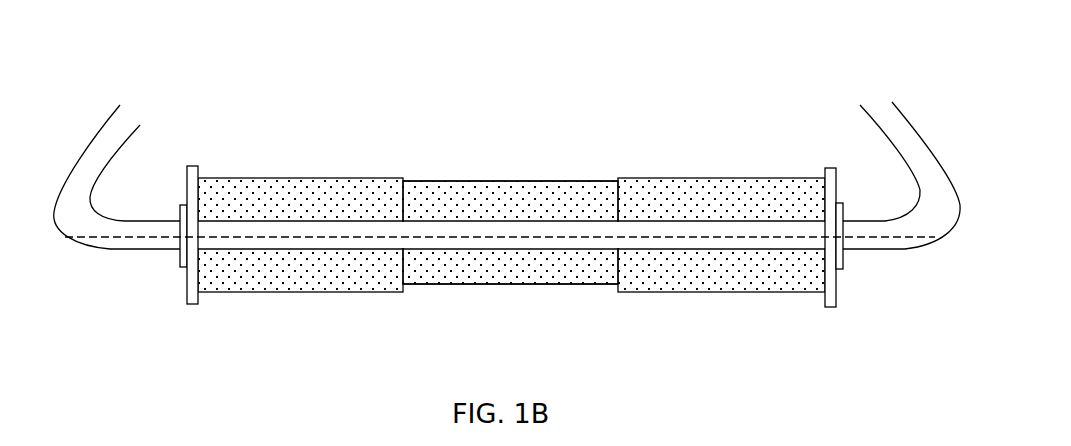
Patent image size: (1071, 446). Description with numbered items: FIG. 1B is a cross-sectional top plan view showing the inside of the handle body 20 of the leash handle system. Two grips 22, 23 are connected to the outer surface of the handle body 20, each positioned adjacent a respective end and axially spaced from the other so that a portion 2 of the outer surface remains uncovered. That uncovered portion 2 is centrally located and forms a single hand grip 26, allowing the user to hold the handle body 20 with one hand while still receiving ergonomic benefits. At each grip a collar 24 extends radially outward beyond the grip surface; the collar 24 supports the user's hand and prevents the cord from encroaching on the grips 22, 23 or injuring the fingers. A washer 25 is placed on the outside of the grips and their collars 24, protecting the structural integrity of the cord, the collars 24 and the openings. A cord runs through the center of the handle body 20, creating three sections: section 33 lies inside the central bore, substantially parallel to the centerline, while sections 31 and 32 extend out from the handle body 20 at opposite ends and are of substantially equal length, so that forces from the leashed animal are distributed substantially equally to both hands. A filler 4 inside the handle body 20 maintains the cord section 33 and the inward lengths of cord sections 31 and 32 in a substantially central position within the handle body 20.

The portion of the outer surface 2 is at (501, 216).
The filler 4 is at (483, 192).
The handle body 20 is at (567, 287).
The grip 22 is at (788, 295).
The grip 23 is at (247, 295).
The collar 24 is at (187, 287).
The washer 25 is at (843, 267).
The single hand grip 26 is at (442, 292).
The cord section 31 is at (867, 120).
The cord section 32 is at (107, 110).
The cord section 33 is at (325, 220).